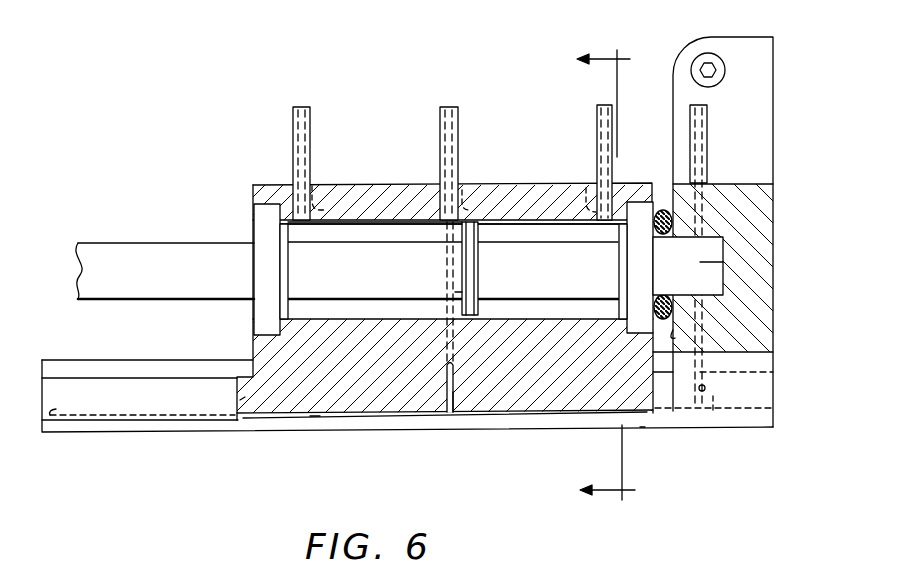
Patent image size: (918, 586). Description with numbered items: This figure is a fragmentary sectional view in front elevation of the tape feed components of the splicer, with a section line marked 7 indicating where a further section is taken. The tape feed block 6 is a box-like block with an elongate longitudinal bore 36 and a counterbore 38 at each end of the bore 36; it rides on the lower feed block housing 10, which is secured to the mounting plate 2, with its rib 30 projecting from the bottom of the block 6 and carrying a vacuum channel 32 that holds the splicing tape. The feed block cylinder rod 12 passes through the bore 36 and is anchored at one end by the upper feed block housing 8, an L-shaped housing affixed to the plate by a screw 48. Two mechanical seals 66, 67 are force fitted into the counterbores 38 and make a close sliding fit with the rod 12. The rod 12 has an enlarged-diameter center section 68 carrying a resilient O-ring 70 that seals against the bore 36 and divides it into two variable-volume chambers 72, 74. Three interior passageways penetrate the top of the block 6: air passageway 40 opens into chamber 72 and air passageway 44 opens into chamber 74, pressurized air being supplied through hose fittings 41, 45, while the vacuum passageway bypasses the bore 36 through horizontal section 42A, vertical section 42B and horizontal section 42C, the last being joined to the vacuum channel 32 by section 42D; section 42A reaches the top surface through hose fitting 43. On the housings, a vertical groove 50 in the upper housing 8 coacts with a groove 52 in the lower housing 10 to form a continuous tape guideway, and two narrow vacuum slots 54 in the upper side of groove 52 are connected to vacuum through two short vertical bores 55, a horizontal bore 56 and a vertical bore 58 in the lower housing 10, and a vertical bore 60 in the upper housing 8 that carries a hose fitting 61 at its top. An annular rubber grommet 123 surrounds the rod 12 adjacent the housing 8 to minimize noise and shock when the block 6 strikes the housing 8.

The mounting plate 2 is at (640, 428).
The tape feed block 6 is at (368, 192).
The section line 7- 7 is at (606, 277).
The upper feed block housing 8 is at (726, 40).
The lower feed block housing 10 is at (177, 362).
The feed block cylinder rod 12 is at (133, 252).
The rib 30 is at (245, 397).
The vacuum channel 32 is at (315, 415).
The bore 36 is at (421, 227).
The counterbores 38 is at (265, 335).
The interior passageway 40 is at (316, 182).
The hose fitting 41 is at (310, 122).
The horizontal section of vacuum passageway 42A is at (462, 203).
The vertical section of vacuum passageway 42B is at (448, 268).
The horizontal section of vacuum passageway 42C is at (448, 364).
The section of vacuum passageway 42D is at (457, 392).
The hose fitting 43 is at (458, 120).
The interior passageway 44 is at (586, 180).
The hose fitting 45 is at (597, 114).
The screw 48 is at (716, 68).
The vertical groove 50 is at (760, 222).
The groove 52 is at (527, 417).
The vacuum slots 54 is at (148, 420).
The vertical bores 55 is at (713, 412).
The horizontal bore 56 is at (700, 392).
The vertical bore 58 is at (750, 370).
The vertical bore 60 is at (712, 262).
The hose fitting 61 is at (707, 142).
The mechanical seal 66 is at (260, 223).
The mechanical seal 67 is at (646, 210).
The enlarged-diameter center section 68 is at (460, 287).
The O-ring 70 is at (474, 262).
The variable-volume chamber 72 is at (386, 228).
The variable-volume chamber 74 is at (538, 222).
The annular rubber grommet 123 is at (673, 330).